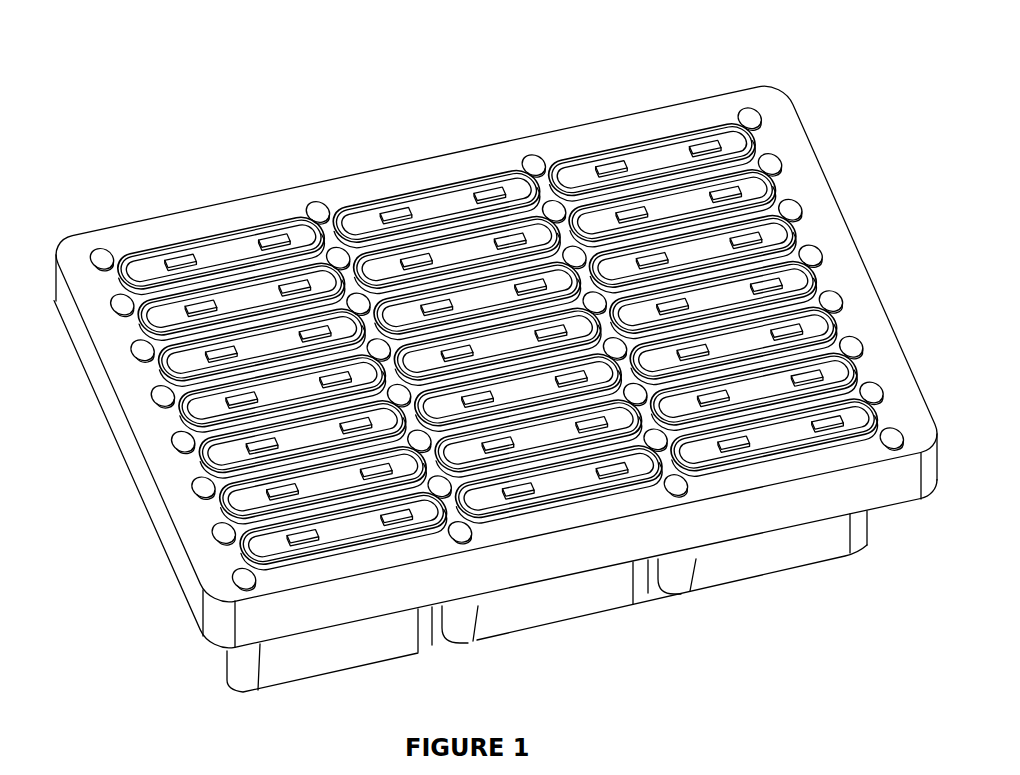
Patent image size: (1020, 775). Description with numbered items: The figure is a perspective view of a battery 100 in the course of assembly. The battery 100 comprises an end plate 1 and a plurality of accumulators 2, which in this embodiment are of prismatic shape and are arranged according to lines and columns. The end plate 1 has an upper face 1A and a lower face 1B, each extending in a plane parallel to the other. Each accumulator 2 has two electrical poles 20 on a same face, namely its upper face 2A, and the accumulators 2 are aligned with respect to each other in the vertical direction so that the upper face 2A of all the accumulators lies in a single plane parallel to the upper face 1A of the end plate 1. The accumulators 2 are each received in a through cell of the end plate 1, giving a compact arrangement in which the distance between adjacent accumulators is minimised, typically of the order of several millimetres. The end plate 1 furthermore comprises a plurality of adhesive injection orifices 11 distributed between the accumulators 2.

The battery 100 is at (490, 383).
The end plate 1 is at (490, 383).
The upper face 1A is at (792, 141).
The lower face 1B is at (213, 648).
The adhesive injection orifices 11 is at (257, 582).
The accumulators 2 is at (499, 374).
The upper face 2A is at (498, 315).
The electrical poles 20 is at (380, 212).